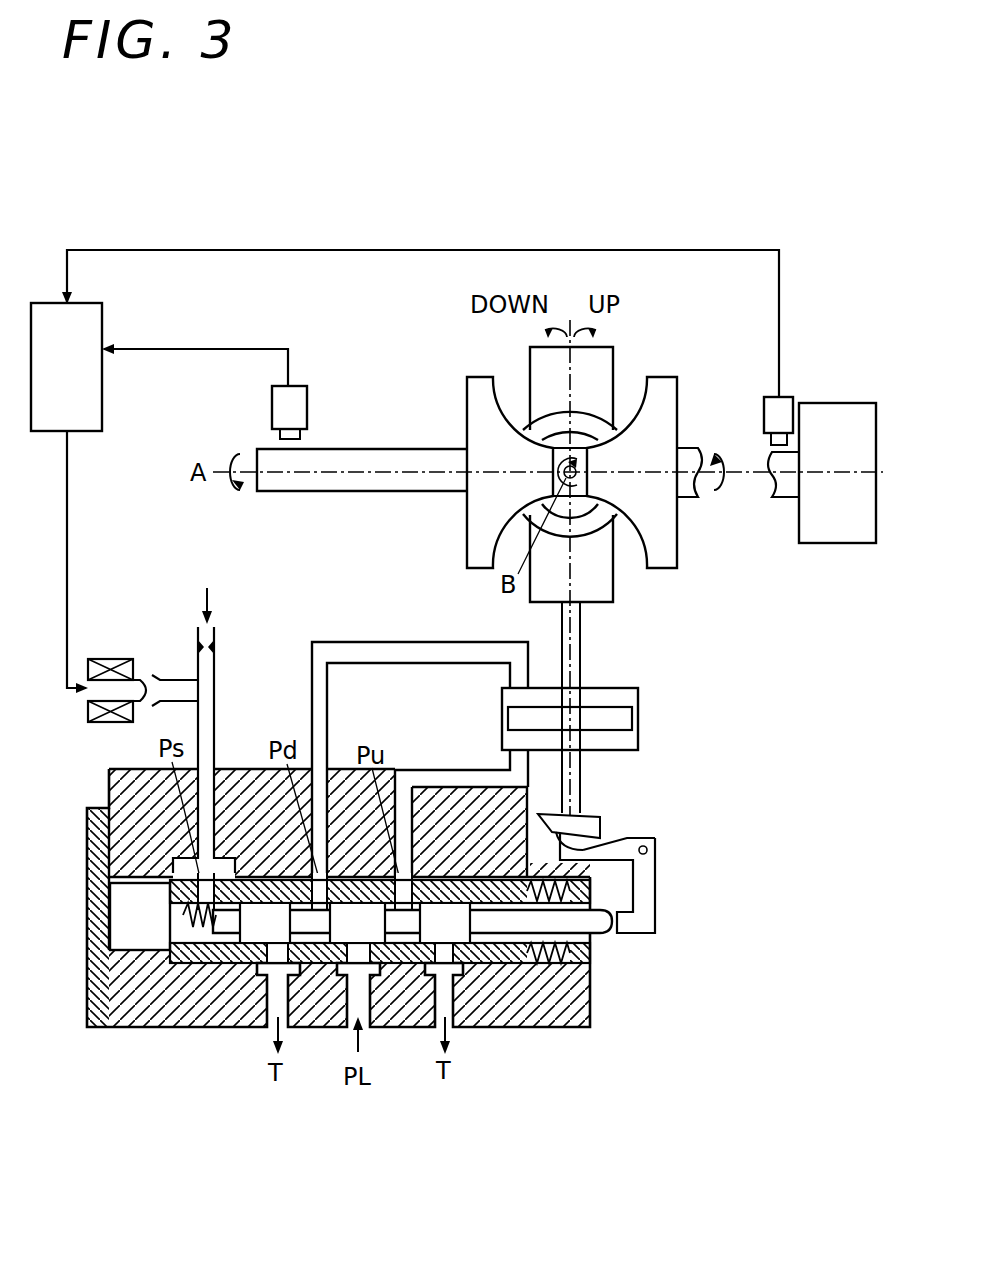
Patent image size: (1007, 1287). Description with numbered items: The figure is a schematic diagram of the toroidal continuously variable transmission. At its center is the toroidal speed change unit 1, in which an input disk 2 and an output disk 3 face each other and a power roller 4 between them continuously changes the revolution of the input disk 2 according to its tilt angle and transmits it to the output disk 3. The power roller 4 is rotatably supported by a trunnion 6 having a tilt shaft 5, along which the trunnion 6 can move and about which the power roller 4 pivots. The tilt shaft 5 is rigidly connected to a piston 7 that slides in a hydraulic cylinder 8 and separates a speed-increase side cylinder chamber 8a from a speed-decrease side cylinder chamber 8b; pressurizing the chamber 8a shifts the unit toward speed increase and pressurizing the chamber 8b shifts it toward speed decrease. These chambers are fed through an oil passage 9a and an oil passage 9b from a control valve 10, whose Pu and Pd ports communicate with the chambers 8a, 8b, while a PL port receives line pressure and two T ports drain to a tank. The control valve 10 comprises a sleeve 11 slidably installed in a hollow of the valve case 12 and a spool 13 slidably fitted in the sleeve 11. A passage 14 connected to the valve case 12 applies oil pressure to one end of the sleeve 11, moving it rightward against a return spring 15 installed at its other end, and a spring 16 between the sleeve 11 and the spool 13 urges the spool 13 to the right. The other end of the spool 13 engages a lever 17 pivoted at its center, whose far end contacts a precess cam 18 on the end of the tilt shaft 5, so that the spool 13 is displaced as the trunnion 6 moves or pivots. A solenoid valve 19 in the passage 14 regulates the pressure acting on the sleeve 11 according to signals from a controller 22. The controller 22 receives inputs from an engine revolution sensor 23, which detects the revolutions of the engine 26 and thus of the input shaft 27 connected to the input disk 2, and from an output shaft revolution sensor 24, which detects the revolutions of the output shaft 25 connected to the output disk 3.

The toroidal speed change unit 1 is at (569, 437).
The input disk 2 is at (665, 400).
The output disk 3 is at (478, 424).
The power roller 4 is at (542, 432).
The tilt shaft 5 is at (580, 632).
The trunnion 6 is at (596, 378).
The piston 7 is at (632, 718).
The hydraulic cylinder 8 is at (592, 722).
The speed-increase side cylinder chamber 8a is at (618, 742).
The speed-decrease side cylinder chamber 8b is at (601, 700).
The oil passage 9a is at (450, 770).
The oil passage 9b is at (420, 645).
The control valve 10 is at (337, 936).
The sleeve 11 is at (490, 955).
The valve case 12 is at (540, 995).
The spool 13 is at (320, 937).
The passage 14 is at (208, 720).
The return spring 15 is at (572, 968).
The spring 16 is at (205, 935).
The lever 17 is at (656, 887).
The precess cam 18 is at (600, 826).
The solenoid valve 19 is at (113, 659).
The controller 22 is at (99, 331).
The engine revolution sensor 23 is at (783, 403).
The output shaft revolution sensor 24 is at (307, 403).
The output shaft 25 is at (355, 492).
The engine 26 is at (818, 545).
The input shaft 27 is at (785, 498).